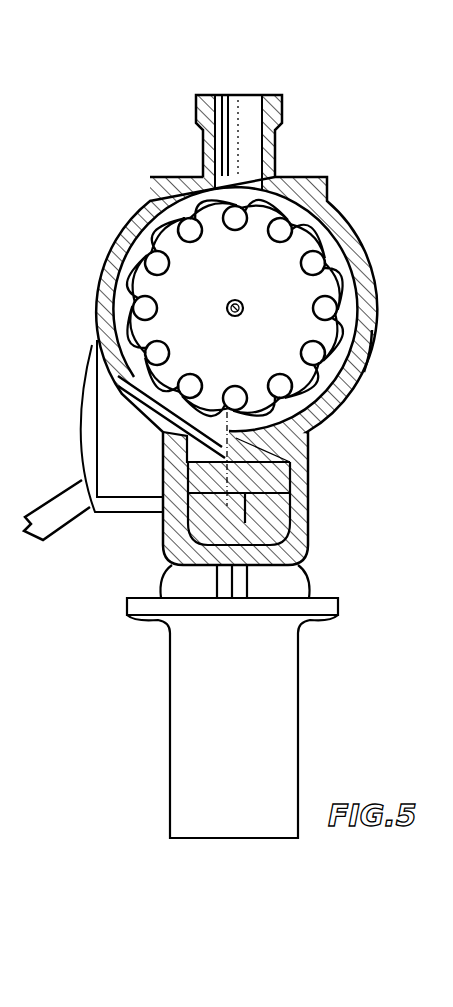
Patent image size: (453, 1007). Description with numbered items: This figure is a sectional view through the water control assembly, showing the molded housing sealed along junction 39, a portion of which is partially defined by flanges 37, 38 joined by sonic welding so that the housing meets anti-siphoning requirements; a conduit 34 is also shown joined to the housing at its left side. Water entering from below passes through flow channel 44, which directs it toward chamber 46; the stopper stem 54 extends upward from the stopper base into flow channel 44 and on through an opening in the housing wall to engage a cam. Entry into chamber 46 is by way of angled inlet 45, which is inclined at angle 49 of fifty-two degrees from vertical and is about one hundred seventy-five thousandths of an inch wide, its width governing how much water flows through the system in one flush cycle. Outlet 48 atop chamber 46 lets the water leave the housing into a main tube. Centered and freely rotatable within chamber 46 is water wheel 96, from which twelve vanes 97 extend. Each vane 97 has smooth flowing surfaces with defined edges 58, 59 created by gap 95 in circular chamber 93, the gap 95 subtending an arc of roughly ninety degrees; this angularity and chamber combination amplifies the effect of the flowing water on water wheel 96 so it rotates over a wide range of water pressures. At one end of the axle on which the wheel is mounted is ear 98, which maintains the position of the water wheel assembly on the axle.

The supply conduit 34 is at (58, 503).
The flange 37 is at (222, 584).
The flange 38 is at (242, 583).
The junction 39 is at (178, 563).
The flow channel 44 is at (274, 502).
The angled inlet 45 is at (298, 456).
The chamber 46 is at (356, 384).
The outlet 48 is at (244, 94).
The angle 49 is at (217, 422).
The stopper stem 54 is at (292, 523).
The defined edge 58 is at (346, 308).
The defined edge 59 is at (370, 346).
The circular chamber 93 is at (288, 200).
The gap 95 is at (316, 250).
The water wheel 96 is at (270, 284).
The vane 97 is at (341, 272).
The ear 98 is at (231, 301).